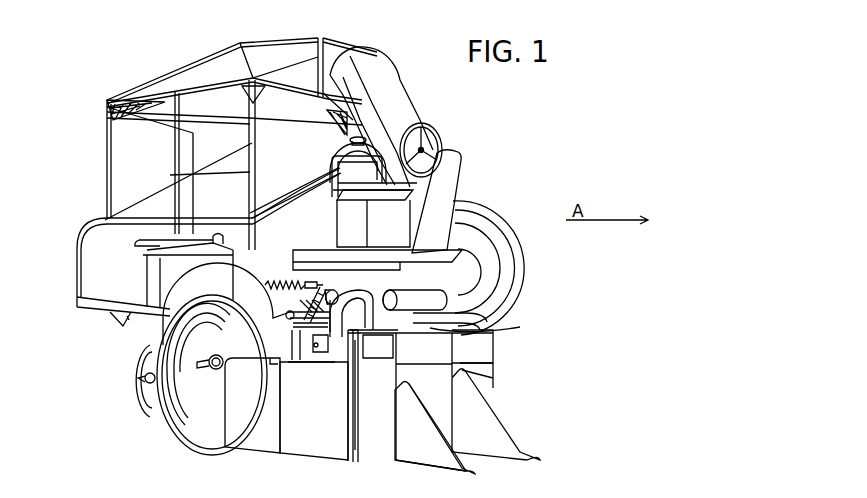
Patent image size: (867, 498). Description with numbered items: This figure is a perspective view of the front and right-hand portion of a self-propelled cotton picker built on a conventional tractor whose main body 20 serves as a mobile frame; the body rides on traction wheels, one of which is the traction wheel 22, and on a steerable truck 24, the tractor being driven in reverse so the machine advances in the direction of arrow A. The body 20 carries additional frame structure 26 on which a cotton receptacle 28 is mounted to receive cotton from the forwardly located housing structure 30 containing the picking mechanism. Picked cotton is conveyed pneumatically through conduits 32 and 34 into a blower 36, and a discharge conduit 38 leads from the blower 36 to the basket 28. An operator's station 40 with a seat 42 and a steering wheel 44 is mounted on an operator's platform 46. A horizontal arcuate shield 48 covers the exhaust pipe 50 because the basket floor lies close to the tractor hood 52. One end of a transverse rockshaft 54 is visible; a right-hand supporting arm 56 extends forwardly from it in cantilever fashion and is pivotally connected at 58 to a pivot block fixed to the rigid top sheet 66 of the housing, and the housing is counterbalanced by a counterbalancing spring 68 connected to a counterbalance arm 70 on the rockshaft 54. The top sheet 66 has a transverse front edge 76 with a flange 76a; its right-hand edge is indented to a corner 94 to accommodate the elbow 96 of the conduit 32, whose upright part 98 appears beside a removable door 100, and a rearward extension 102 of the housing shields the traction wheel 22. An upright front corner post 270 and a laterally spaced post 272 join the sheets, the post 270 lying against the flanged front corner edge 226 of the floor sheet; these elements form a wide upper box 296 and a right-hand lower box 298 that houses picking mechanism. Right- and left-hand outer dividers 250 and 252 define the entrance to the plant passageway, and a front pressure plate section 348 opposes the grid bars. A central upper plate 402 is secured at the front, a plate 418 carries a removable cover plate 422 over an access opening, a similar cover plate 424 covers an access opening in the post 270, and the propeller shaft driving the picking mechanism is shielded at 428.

The main body 20 is at (137, 335).
The traction wheel 22 is at (213, 447).
The steerable truck 24 is at (140, 401).
The additional frame structure 26 is at (80, 237).
The cotton receptacle 28 is at (107, 134).
The housing structure 30 is at (506, 374).
The conduit 32 is at (497, 262).
The conduit 34 is at (516, 277).
The blower 36 is at (460, 191).
The discharge conduit 38 is at (398, 77).
The operator's station 40 is at (307, 170).
The seat 42 is at (335, 160).
The steering wheel 44 is at (441, 139).
The operator's platform 46 is at (458, 249).
The arcuate shield 48 is at (139, 240).
The exhaust pipe 50 is at (218, 246).
The tractor hood 52 is at (147, 259).
The transverse rockshaft 54 is at (286, 316).
The supporting arm 56 is at (292, 320).
The pivotal connection 58 is at (308, 326).
The top sheet 66 is at (495, 335).
The counterbalancing spring 68 is at (296, 281).
The counterbalance arm 70 is at (322, 289).
The transverse front edge 76 is at (440, 325).
The flange 76a is at (493, 326).
The corner 94 is at (351, 313).
The elbow 96 is at (372, 303).
The upright part of elbow 98 is at (337, 356).
The removable door 100 is at (318, 448).
The rearward extension 102 is at (260, 446).
The flanged front corner edge 226 is at (375, 462).
The right-hand outer divider 250 is at (432, 467).
The left-hand outer divider 252 is at (512, 442).
The front corner column 270 is at (367, 453).
The upright wall element 272 is at (464, 371).
The upper box 296 is at (476, 352).
The right-hand lower box 298 is at (357, 416).
The front pressure plate section 348 is at (443, 417).
The central upper plate 402 is at (447, 358).
The plate 418 is at (312, 350).
The removable cover plate 422 is at (310, 357).
The cover plate 424 is at (377, 360).
The propeller shaft shield 428 is at (337, 290).